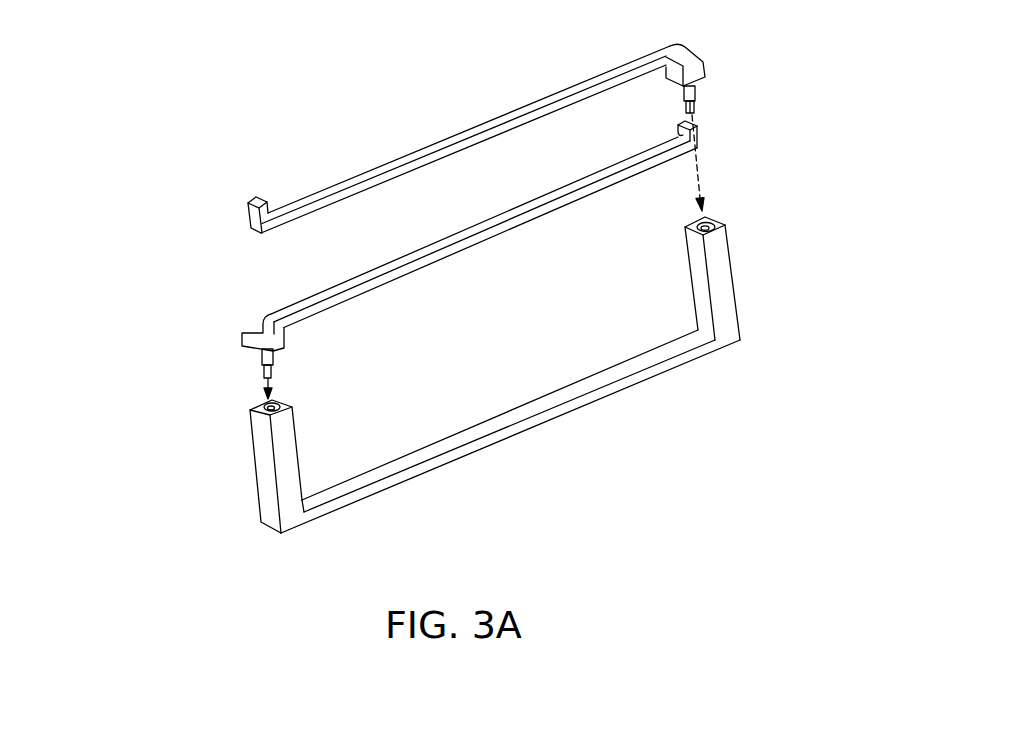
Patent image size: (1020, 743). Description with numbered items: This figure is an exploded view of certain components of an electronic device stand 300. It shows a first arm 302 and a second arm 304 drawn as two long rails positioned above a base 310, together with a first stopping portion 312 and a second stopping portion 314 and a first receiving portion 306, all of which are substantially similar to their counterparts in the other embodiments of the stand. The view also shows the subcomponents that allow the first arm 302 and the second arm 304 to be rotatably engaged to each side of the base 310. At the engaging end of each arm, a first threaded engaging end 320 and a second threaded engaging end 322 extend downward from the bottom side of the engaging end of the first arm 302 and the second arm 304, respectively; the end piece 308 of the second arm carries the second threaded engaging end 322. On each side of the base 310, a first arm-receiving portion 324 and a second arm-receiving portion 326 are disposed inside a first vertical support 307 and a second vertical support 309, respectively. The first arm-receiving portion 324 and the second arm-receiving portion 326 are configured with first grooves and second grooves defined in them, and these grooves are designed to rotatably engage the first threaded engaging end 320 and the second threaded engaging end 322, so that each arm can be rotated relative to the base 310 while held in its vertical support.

The electronic device stand 300 is at (163, 106).
The first arm 302 is at (480, 257).
The second arm 304 is at (468, 126).
The first receiving portion 306 is at (247, 328).
The first vertical support 307 is at (256, 466).
The end of first rail 308 is at (690, 67).
The second vertical support 309 is at (742, 280).
The base 310 is at (525, 391).
The first stopping portion 312 is at (698, 138).
The second stopping portion 314 is at (256, 199).
The first threaded engaging end 320 is at (262, 372).
The second threaded engaging end 322 is at (698, 104).
The first arm-receiving portion 324 is at (284, 401).
The second arm-receiving portion 326 is at (718, 224).